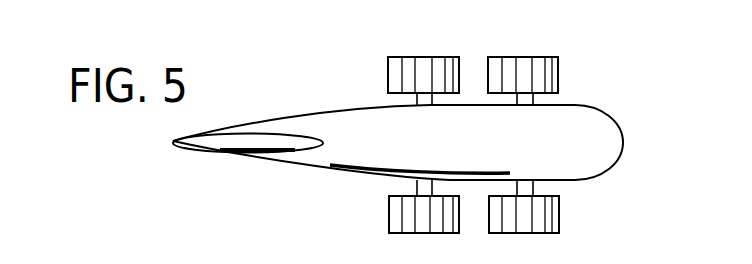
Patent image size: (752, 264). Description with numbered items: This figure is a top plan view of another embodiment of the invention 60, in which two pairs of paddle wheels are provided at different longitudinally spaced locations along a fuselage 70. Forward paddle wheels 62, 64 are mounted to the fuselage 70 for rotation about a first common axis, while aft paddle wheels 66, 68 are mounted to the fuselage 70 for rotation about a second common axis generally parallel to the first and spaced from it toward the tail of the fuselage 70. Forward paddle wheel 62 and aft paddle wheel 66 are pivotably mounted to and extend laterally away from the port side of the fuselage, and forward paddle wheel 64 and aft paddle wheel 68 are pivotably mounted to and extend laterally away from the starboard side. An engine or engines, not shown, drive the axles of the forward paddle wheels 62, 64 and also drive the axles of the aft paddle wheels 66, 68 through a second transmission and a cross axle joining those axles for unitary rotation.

The embodiment of the invention 60 is at (617, 110).
The forward paddle wheel 62 is at (525, 57).
The forward paddle wheel 64 is at (559, 216).
The aft paddle wheel 66 is at (388, 68).
The aft paddle wheel 68 is at (389, 218).
The fuselage 70 is at (495, 140).